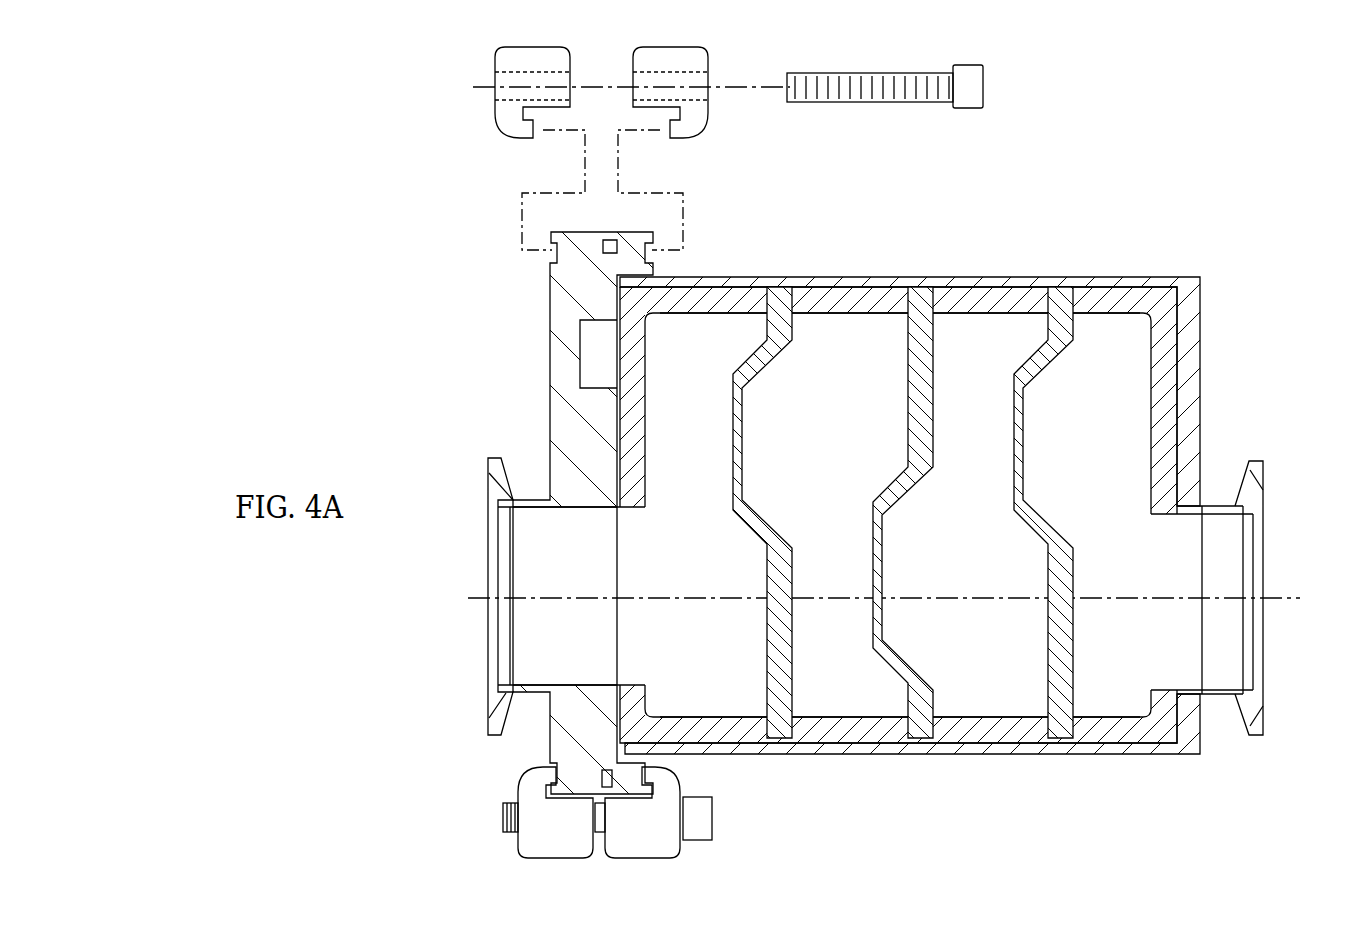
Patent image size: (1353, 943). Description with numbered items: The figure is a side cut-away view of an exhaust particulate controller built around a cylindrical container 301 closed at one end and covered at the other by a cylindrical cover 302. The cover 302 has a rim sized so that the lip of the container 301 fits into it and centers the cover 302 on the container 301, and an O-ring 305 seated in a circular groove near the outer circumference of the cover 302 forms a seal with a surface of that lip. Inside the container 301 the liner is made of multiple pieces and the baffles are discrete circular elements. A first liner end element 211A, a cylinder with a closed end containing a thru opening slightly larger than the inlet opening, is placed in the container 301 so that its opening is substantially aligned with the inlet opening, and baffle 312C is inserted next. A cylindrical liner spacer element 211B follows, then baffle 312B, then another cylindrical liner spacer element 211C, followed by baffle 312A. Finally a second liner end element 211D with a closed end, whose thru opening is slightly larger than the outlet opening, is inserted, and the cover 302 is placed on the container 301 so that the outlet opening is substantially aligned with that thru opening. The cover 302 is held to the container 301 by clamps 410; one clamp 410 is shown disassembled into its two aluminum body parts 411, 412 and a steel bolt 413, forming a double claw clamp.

The cylindrical container 301 is at (743, 755).
The cylindrical cover 302 is at (548, 315).
The O-ring 305 is at (620, 788).
The first liner end element 211A is at (1129, 296).
The cylindrical liner spacer element 211B is at (993, 296).
The cylindrical liner spacer element 211C is at (845, 296).
The second liner end element 211D is at (733, 296).
The baffle 312A is at (792, 688).
The baffle 312B is at (922, 728).
The baffle 312C is at (1064, 655).
The clamp 410 is at (663, 453).
The clamp part 411 is at (489, 108).
The clamp part 412 is at (714, 108).
The bolt 413 is at (818, 70).